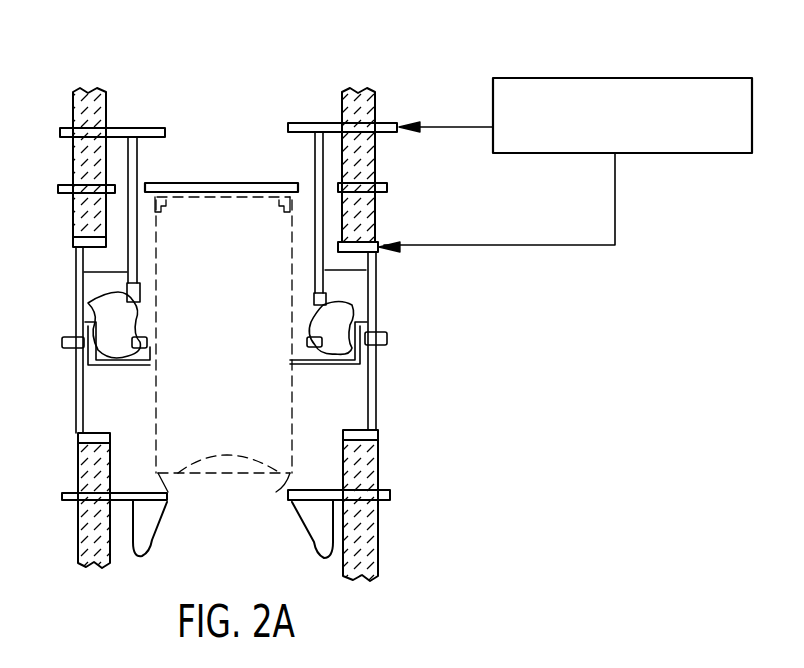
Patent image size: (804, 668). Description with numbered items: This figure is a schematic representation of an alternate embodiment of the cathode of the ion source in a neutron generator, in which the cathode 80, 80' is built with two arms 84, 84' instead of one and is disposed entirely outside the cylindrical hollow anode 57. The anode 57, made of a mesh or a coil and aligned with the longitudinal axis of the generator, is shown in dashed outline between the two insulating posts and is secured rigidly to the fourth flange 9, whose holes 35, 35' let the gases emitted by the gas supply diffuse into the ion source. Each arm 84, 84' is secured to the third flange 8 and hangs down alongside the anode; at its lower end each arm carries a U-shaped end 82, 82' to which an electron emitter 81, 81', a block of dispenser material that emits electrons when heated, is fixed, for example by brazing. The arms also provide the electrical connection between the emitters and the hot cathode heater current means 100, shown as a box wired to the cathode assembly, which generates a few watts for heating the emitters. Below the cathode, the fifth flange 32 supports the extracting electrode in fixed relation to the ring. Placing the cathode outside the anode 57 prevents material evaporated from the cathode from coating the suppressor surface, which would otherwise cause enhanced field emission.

The third flange 8 is at (62, 128).
The fourth flange 9 is at (62, 186).
The hole in fourth flange 35 is at (79, 167).
The hole in fourth flange 35' is at (389, 170).
The arm 84 is at (87, 219).
The arm 84' is at (385, 218).
The cathode 80 is at (84, 316).
The cathode 80' is at (392, 316).
The U-shaped end 82 is at (82, 345).
The U-shaped end 82' is at (380, 336).
The electron emitter 81 is at (117, 365).
The electron emitter 81' is at (369, 357).
The fifth flange 32 is at (66, 493).
The hollow anode 57 is at (292, 385).
The hot cathode heater current means 100 is at (530, 78).